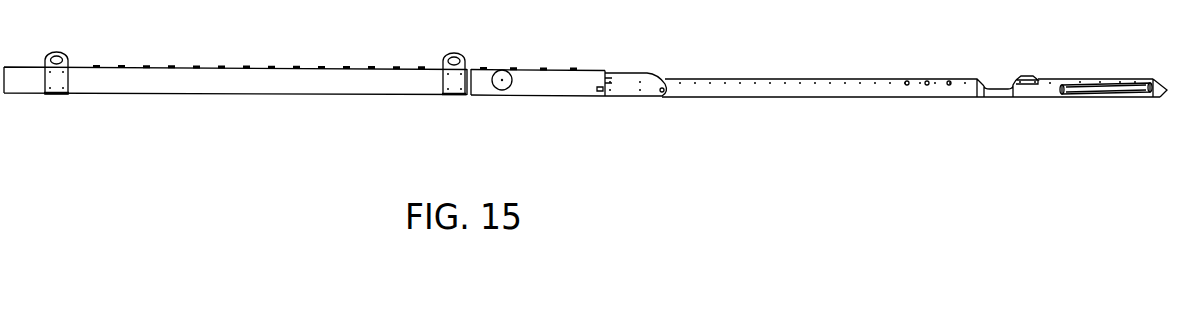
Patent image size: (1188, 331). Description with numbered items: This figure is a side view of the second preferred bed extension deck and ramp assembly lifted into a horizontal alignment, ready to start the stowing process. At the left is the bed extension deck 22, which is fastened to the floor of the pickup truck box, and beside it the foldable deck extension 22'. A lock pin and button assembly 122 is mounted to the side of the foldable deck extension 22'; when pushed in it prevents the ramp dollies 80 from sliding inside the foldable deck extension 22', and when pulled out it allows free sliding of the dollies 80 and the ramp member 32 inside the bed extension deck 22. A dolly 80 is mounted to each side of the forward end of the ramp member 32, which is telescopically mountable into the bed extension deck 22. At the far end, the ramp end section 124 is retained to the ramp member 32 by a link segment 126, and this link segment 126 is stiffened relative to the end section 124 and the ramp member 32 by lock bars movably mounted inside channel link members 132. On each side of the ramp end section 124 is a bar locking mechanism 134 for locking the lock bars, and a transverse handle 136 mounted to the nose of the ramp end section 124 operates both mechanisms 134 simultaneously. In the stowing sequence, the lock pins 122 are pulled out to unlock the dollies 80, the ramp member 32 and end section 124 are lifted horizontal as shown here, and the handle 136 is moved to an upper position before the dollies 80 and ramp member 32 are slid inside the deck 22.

The bed extension deck 22 is at (237, 52).
The foldable deck extension 22' is at (538, 51).
The lock pin and button assembly 122 is at (500, 70).
The dolly 80 is at (622, 72).
The ramp member 32 is at (780, 78).
The ramp end section 124 is at (1078, 78).
The link segment 126 is at (995, 102).
The channel link member 132 is at (1003, 98).
The bar locking mechanism 134 is at (1116, 93).
The transverse handle 136 is at (1160, 78).